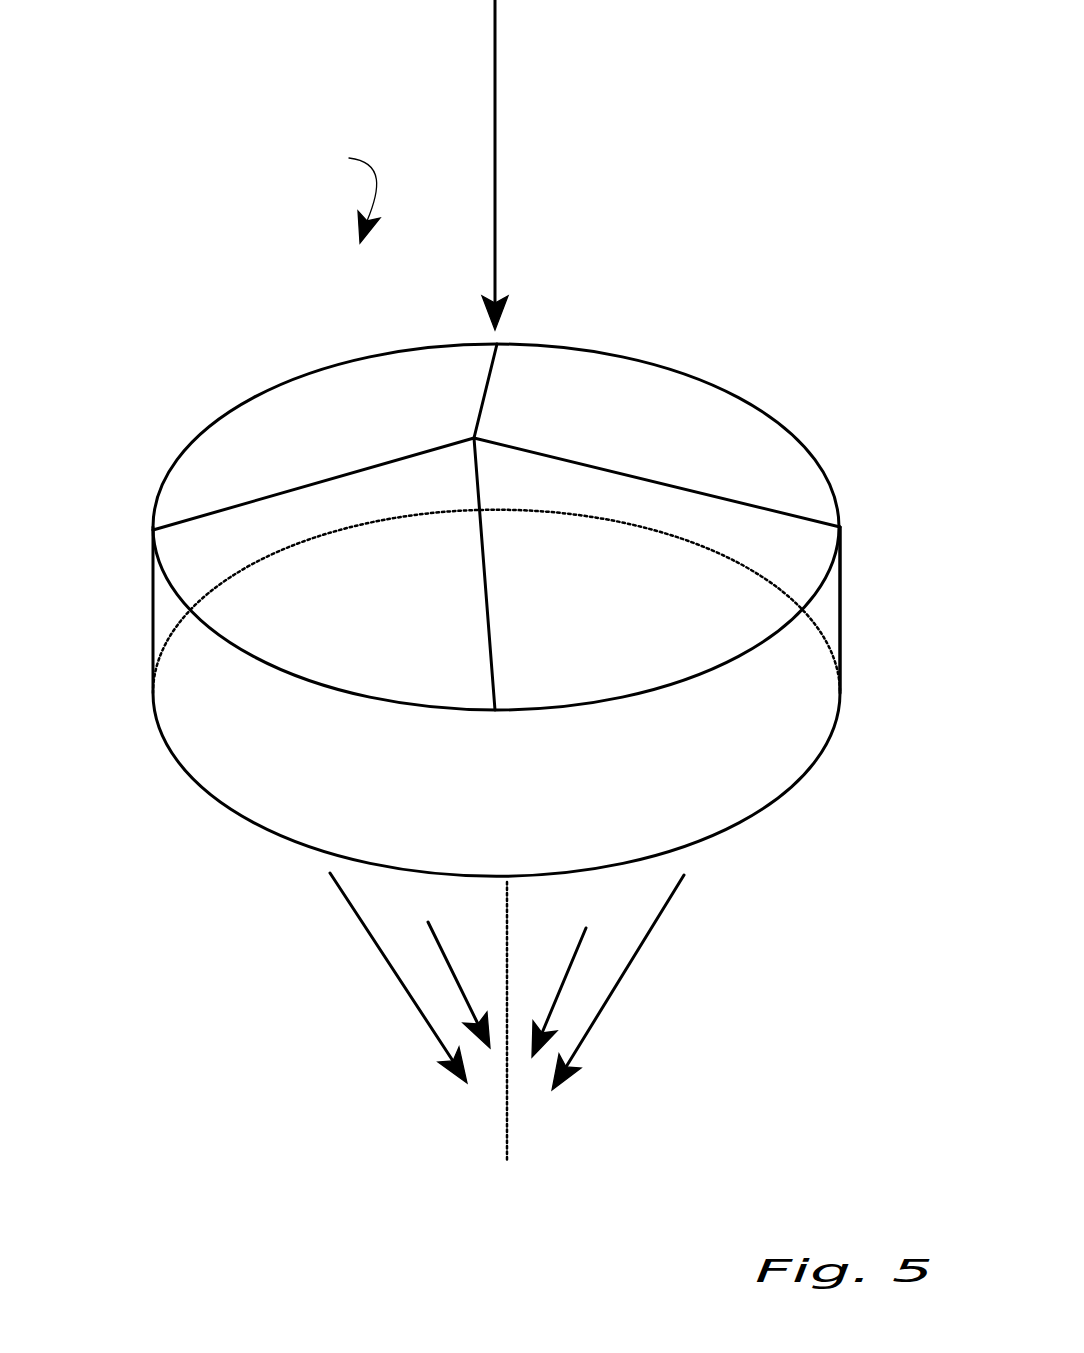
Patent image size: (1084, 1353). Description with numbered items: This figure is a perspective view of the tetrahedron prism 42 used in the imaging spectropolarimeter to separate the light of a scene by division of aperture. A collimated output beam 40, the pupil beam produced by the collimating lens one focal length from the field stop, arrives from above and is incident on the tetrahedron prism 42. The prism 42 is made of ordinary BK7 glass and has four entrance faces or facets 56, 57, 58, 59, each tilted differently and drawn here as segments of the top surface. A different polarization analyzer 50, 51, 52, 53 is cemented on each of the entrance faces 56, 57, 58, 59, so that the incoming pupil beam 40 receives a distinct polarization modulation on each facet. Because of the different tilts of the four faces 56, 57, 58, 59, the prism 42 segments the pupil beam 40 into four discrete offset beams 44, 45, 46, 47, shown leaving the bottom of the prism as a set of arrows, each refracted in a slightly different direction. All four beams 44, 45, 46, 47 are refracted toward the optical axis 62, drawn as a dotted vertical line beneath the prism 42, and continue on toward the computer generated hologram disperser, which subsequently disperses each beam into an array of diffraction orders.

The collimated output beam 40 is at (496, 152).
The tetrahedron prism 42 is at (340, 189).
The offset beam 44 is at (390, 972).
The offset beam 45 is at (632, 967).
The offset beam 46 is at (578, 957).
The offset beam 47 is at (443, 957).
The polarization analyzer 50 is at (268, 603).
The polarization analyzer 51 is at (767, 608).
The polarization analyzer 52 is at (790, 454).
The polarization analyzer 53 is at (285, 420).
The entrance face 56 is at (393, 603).
The entrance face 57 is at (624, 619).
The entrance face 58 is at (603, 417).
The entrance face 59 is at (440, 403).
The optical axis 62 is at (508, 1105).